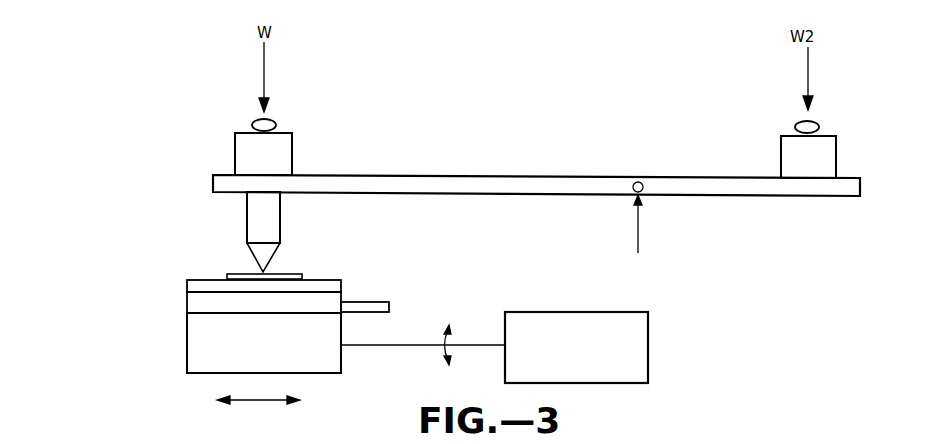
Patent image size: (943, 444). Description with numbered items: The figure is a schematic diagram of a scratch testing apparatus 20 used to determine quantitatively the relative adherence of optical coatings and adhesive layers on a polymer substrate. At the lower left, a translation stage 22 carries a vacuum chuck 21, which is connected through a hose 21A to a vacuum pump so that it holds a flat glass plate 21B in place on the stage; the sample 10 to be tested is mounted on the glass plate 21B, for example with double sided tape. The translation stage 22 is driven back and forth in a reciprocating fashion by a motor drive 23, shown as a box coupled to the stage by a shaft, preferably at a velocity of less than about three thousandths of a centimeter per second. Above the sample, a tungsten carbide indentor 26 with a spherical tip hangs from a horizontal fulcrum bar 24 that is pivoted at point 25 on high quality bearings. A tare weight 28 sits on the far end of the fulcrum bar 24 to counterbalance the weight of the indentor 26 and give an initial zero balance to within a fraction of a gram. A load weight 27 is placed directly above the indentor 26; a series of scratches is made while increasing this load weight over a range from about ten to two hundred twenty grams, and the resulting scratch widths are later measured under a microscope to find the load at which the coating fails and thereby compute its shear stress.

The sample 10 is at (240, 274).
The scratch testing apparatus 20 is at (526, 240).
The vacuum chuck 21 is at (202, 306).
The hose 21A is at (369, 302).
The glass plate 21B is at (328, 280).
The translation stage 22 is at (200, 350).
The motor drive 23 is at (650, 352).
The fulcrum bar 24 is at (405, 184).
The pivot point 25 is at (641, 181).
The indentor 26 is at (262, 258).
The load weight 27 is at (292, 151).
The tare weight 28 is at (790, 152).